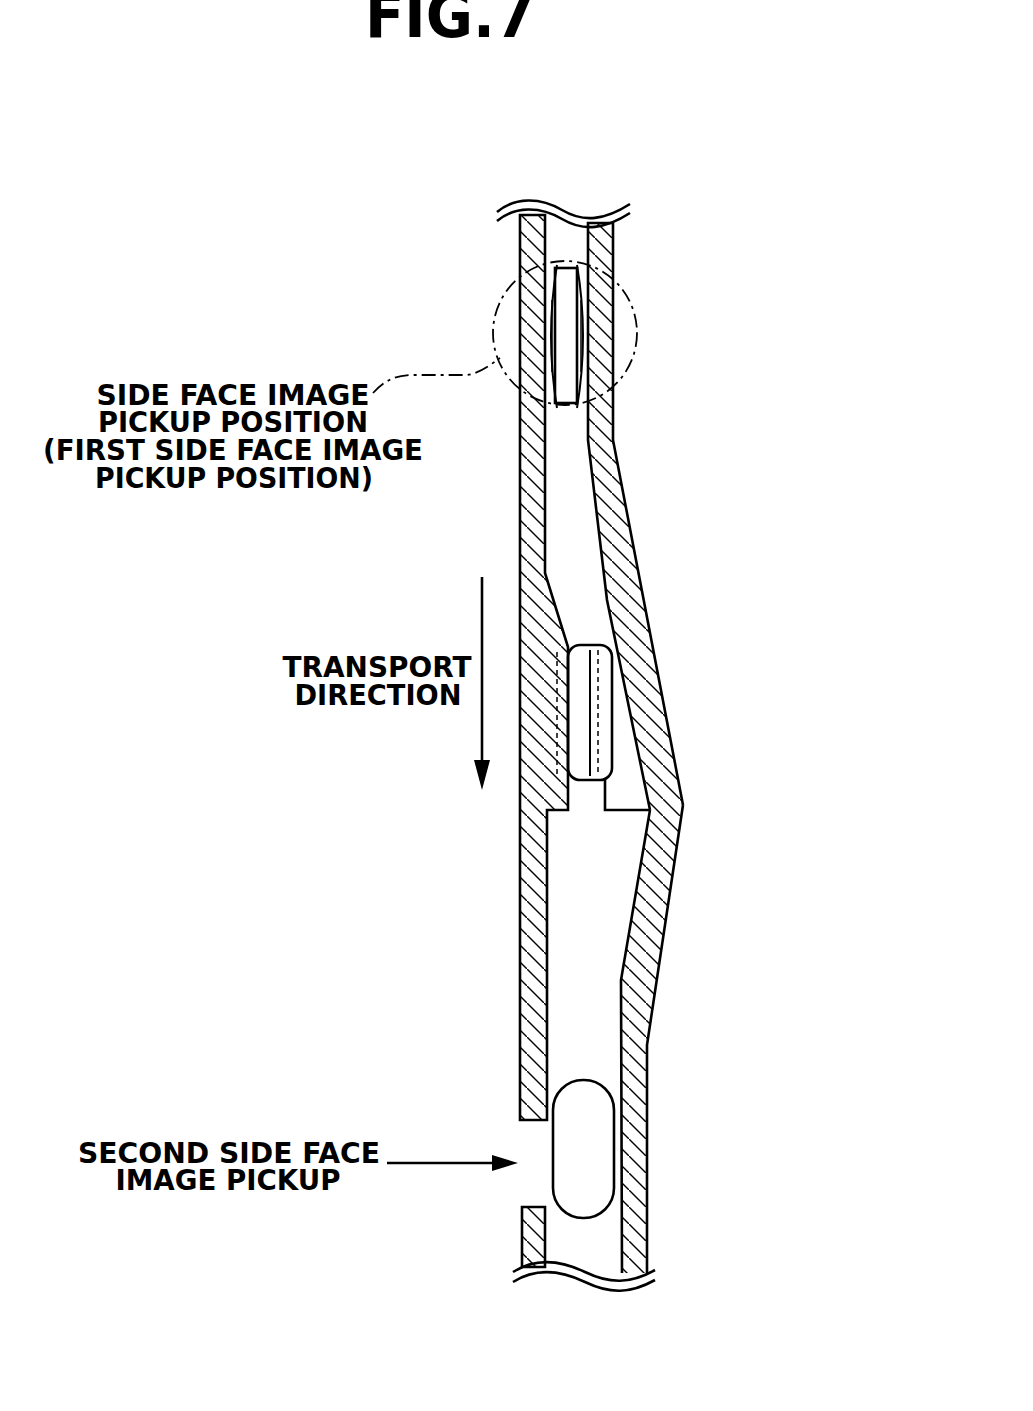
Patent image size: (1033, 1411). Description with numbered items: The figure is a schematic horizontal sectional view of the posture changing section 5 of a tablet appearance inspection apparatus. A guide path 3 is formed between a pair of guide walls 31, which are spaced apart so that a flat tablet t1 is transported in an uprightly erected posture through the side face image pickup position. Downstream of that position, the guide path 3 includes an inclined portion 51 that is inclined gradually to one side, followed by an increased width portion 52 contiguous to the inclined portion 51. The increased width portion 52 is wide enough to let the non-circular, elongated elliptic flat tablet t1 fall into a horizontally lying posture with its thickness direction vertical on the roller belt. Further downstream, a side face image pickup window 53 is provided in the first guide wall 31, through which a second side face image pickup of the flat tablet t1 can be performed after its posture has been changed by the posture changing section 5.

The guide path 3 is at (563, 467).
The posture changing section 5 is at (708, 535).
The guide wall 31 is at (535, 892).
The inclined portion 51 is at (620, 797).
The increased width portion 52 is at (590, 1057).
The side face image pickup window 53 is at (533, 1205).
The flat tablet t1 is at (568, 343).